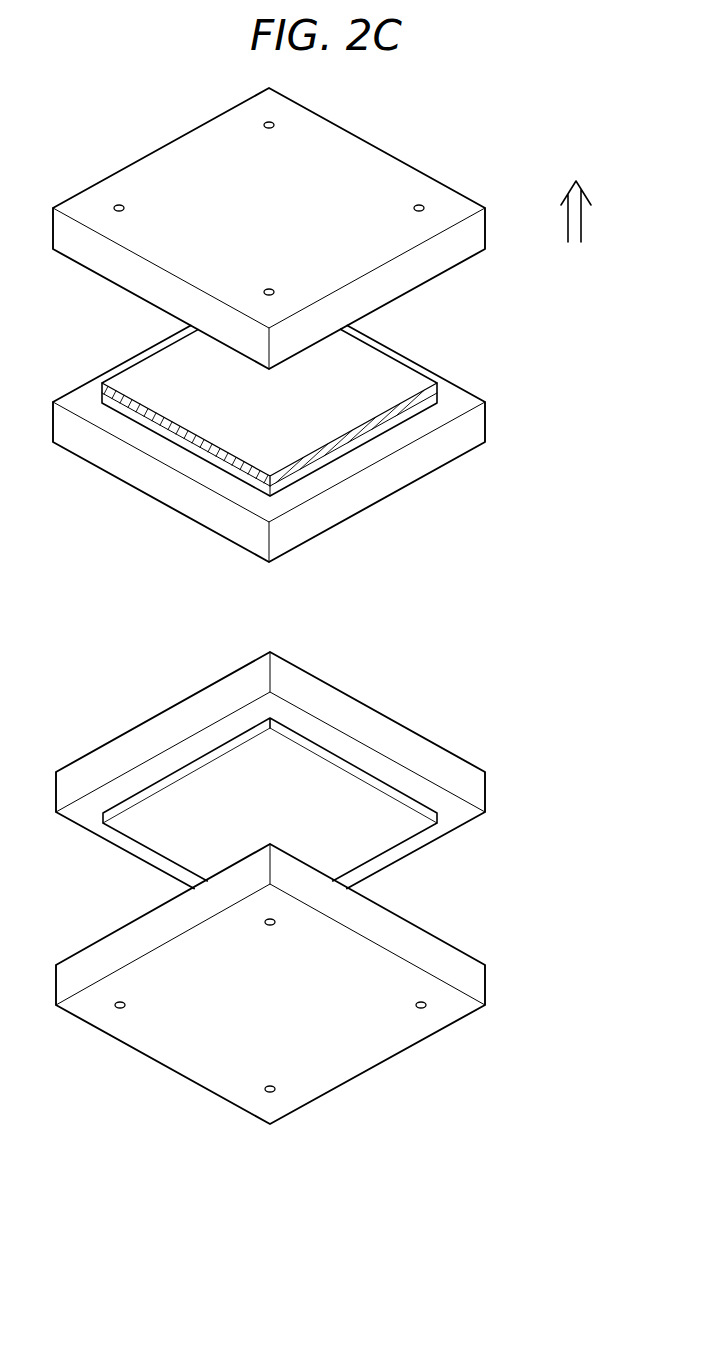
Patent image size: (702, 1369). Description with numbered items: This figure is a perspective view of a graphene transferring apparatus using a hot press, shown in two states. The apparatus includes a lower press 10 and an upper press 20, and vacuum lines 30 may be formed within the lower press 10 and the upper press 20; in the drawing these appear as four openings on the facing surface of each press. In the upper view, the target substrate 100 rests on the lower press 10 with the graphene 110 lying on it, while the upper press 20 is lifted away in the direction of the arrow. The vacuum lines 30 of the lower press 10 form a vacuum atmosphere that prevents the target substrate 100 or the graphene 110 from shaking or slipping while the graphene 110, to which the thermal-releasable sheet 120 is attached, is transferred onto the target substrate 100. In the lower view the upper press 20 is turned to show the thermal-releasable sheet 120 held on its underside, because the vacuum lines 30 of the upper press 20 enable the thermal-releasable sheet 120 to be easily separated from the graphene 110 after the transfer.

The lower press 10 is at (472, 422).
The upper press 20 is at (471, 233).
The vacuum lines 30 is at (418, 202).
The target substrate 100 is at (440, 395).
The graphene 110 is at (442, 382).
The thermal-releasable sheet 120 is at (380, 827).